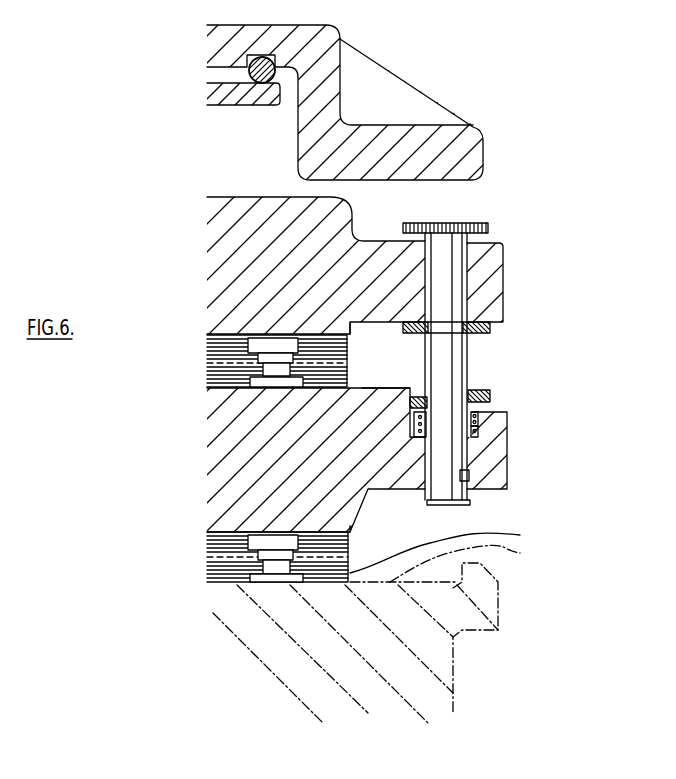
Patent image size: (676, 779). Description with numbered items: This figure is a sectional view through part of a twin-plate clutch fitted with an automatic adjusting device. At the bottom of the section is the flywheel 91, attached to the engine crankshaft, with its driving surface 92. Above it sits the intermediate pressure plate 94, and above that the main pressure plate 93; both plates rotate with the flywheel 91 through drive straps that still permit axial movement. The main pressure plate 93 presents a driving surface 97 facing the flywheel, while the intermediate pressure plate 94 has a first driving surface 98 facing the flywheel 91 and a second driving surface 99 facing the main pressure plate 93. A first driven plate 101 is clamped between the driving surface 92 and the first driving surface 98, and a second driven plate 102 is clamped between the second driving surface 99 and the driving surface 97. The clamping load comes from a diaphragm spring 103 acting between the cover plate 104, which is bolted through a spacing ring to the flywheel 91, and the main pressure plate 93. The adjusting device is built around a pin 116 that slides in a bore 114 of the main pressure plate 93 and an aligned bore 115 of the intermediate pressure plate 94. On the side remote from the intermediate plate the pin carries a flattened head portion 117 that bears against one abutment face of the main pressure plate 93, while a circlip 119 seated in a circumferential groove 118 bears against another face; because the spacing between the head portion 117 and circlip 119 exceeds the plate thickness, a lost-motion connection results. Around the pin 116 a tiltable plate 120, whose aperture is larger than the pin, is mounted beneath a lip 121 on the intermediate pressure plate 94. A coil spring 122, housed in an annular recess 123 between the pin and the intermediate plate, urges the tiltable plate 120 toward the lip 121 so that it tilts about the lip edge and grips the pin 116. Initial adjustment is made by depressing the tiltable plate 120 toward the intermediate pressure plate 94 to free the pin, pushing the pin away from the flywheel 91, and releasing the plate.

The cover plate 104 is at (339, 44).
The diaphragm spring 103 is at (205, 110).
The main pressure plate 93 is at (354, 216).
The driving surface 97 is at (352, 335).
The second driving surface 99 is at (362, 388).
The flattened head portion 117 is at (490, 228).
The bore 114 is at (457, 297).
The circumferential groove 118 is at (462, 339).
The pin 116 is at (470, 362).
The circlip 119 is at (488, 331).
The second driven plate 102 is at (207, 366).
The intermediate pressure plate 94 is at (412, 489).
The first driving surface 98 is at (352, 535).
The lip 121 is at (423, 393).
The tiltable plate 120 is at (490, 393).
The annular recess 123 is at (478, 422).
The coil spring 122 is at (478, 432).
The bore 115 is at (469, 468).
The first driven plate 101 is at (495, 535).
The driving surface 92 is at (480, 553).
The flywheel 91 is at (420, 652).